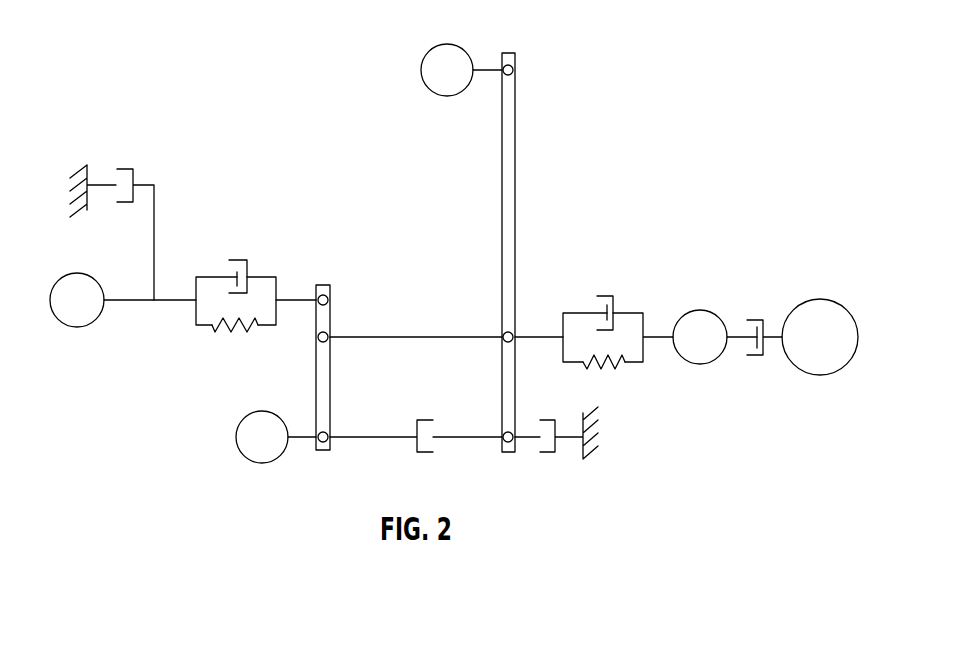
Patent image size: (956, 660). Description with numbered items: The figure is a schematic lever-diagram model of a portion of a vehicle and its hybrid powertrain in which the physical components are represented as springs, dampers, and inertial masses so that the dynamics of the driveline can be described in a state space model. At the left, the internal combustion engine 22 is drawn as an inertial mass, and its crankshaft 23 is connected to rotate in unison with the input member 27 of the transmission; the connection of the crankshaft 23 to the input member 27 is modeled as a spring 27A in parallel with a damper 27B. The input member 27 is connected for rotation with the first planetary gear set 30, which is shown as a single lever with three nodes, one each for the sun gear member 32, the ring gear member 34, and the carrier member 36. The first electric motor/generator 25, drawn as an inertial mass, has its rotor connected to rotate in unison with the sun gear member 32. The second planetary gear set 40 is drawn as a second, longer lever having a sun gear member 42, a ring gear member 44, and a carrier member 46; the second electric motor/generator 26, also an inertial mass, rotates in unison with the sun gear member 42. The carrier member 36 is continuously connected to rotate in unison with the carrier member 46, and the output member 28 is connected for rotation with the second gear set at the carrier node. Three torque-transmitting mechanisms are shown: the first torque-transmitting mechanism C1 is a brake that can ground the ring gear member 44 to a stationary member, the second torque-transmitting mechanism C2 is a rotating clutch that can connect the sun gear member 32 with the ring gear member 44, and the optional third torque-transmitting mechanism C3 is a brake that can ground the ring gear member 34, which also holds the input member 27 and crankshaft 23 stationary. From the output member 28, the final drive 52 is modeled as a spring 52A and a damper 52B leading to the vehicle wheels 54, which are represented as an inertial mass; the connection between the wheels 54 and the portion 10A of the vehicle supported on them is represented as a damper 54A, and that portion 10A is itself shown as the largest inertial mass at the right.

The portion of the vehicle supported on the wheels 10A is at (820, 300).
The internal combustion engine 22 is at (65, 278).
The crankshaft 23 is at (115, 303).
The first electric motor/generator 25 is at (243, 455).
The second electric motor/generator 26 is at (430, 53).
The input member 27 is at (292, 298).
The spring 27A is at (238, 340).
The damper 27B is at (237, 259).
The output member 28 is at (534, 337).
The first planetary gear set 30 is at (333, 382).
The sun gear member 32 is at (328, 442).
The ring gear member 34 is at (328, 297).
The carrier member 36 is at (328, 335).
The second planetary gear set 40 is at (489, 193).
The sun gear member 42 is at (514, 65).
The ring gear member 44 is at (503, 442).
The carrier member 46 is at (503, 343).
The final drive 52 is at (606, 294).
The spring 52A is at (615, 370).
The damper 52B is at (618, 303).
The vehicle wheels 54 is at (703, 311).
The damper 54A is at (755, 318).
The first torque-transmitting mechanism C1 is at (547, 421).
The second torque-transmitting mechanism C2 is at (429, 420).
The third torque-transmitting mechanism C3 is at (140, 168).